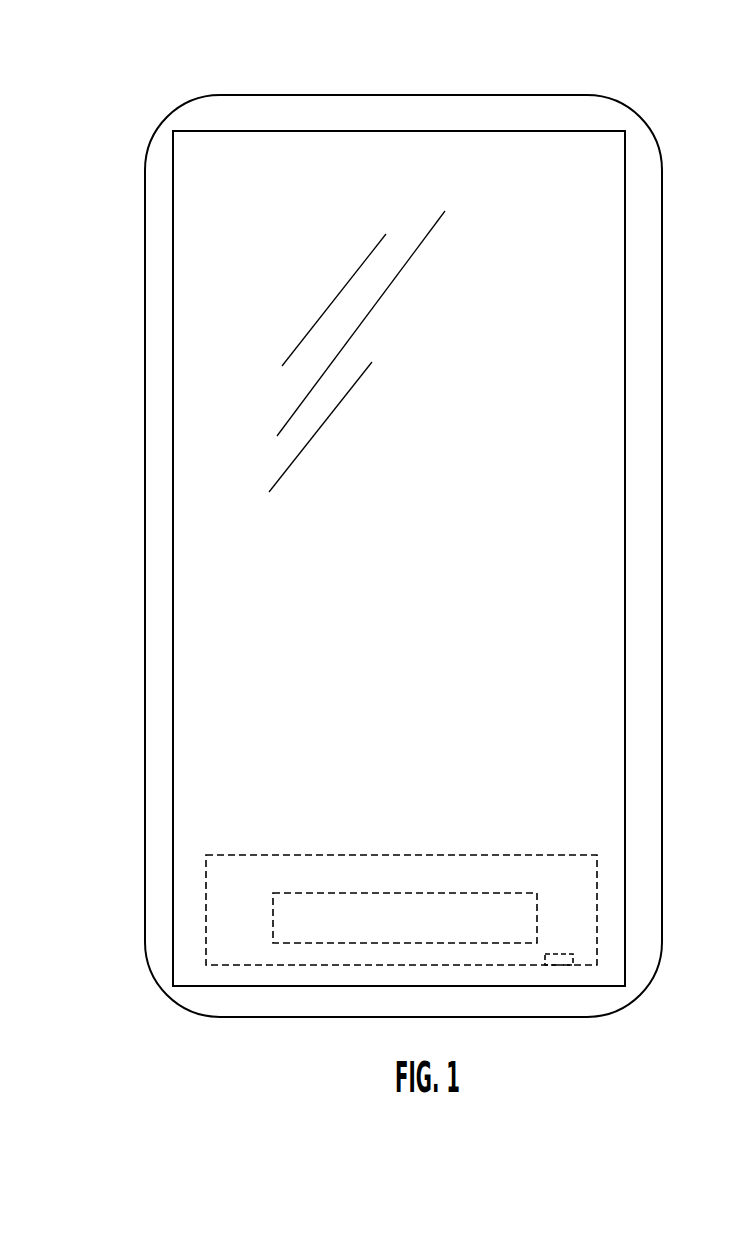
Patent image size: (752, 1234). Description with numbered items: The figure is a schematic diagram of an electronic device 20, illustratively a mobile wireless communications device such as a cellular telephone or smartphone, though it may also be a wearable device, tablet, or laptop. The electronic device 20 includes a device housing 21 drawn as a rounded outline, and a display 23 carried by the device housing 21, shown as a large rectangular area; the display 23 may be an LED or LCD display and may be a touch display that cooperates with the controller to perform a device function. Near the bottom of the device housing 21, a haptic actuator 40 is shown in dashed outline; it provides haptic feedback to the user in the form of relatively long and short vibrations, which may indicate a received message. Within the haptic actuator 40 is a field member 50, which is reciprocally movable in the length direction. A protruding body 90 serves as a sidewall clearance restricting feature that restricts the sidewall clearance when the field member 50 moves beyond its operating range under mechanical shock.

The electronic device 20 is at (116, 83).
The device housing 21 is at (145, 223).
The display 23 is at (203, 293).
The haptic actuator 40 is at (206, 855).
The field member 50 is at (277, 945).
The protruding body 90 is at (573, 955).